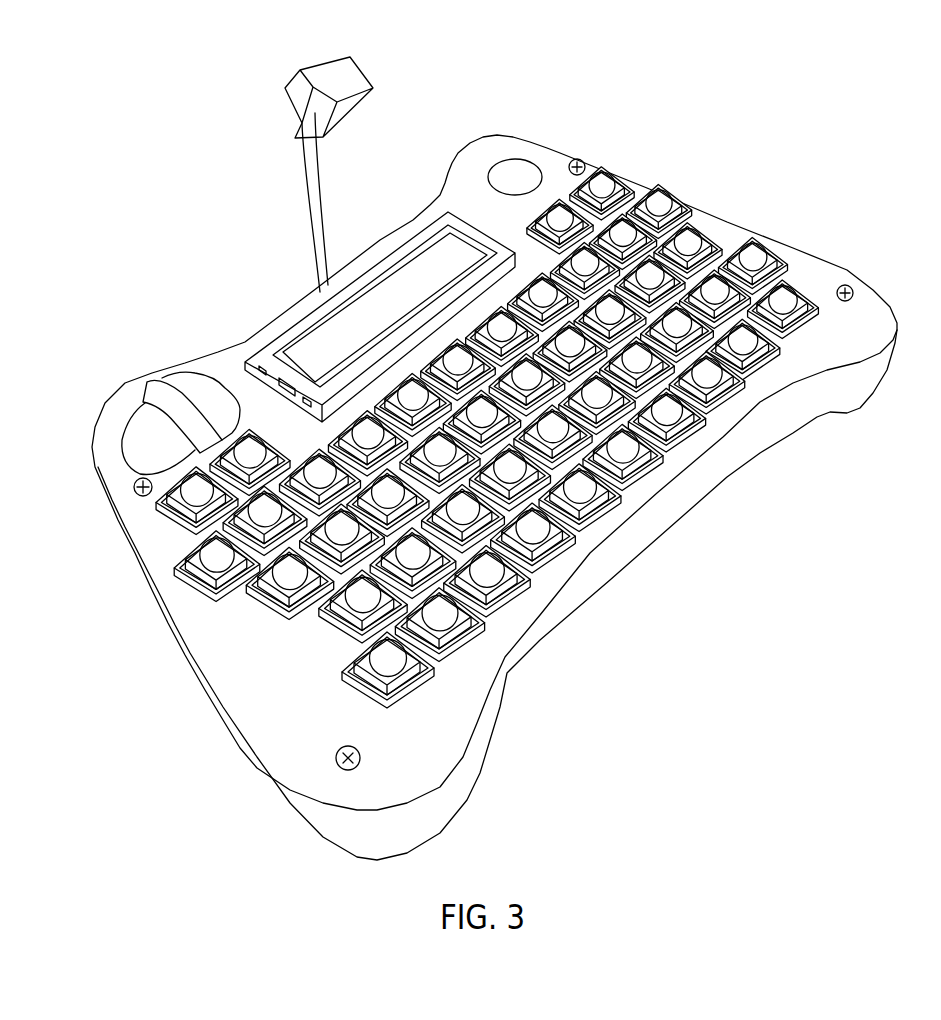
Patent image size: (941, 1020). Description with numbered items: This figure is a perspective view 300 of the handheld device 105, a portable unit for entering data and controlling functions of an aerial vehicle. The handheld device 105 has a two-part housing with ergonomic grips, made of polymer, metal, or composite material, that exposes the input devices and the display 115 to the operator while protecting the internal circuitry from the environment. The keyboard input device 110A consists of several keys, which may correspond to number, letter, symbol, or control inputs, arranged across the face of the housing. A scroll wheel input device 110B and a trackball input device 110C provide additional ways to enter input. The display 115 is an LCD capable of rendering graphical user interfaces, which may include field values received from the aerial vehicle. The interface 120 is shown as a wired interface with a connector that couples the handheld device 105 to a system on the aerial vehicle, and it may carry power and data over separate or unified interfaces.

The perspective view 300 is at (488, 436).
The handheld device 105 is at (488, 472).
The keyboard input device 110A is at (208, 557).
The scroll wheel input device 110B is at (172, 378).
The trackball input device 110C is at (515, 173).
The display 115 is at (320, 340).
The interface 120 is at (335, 97).